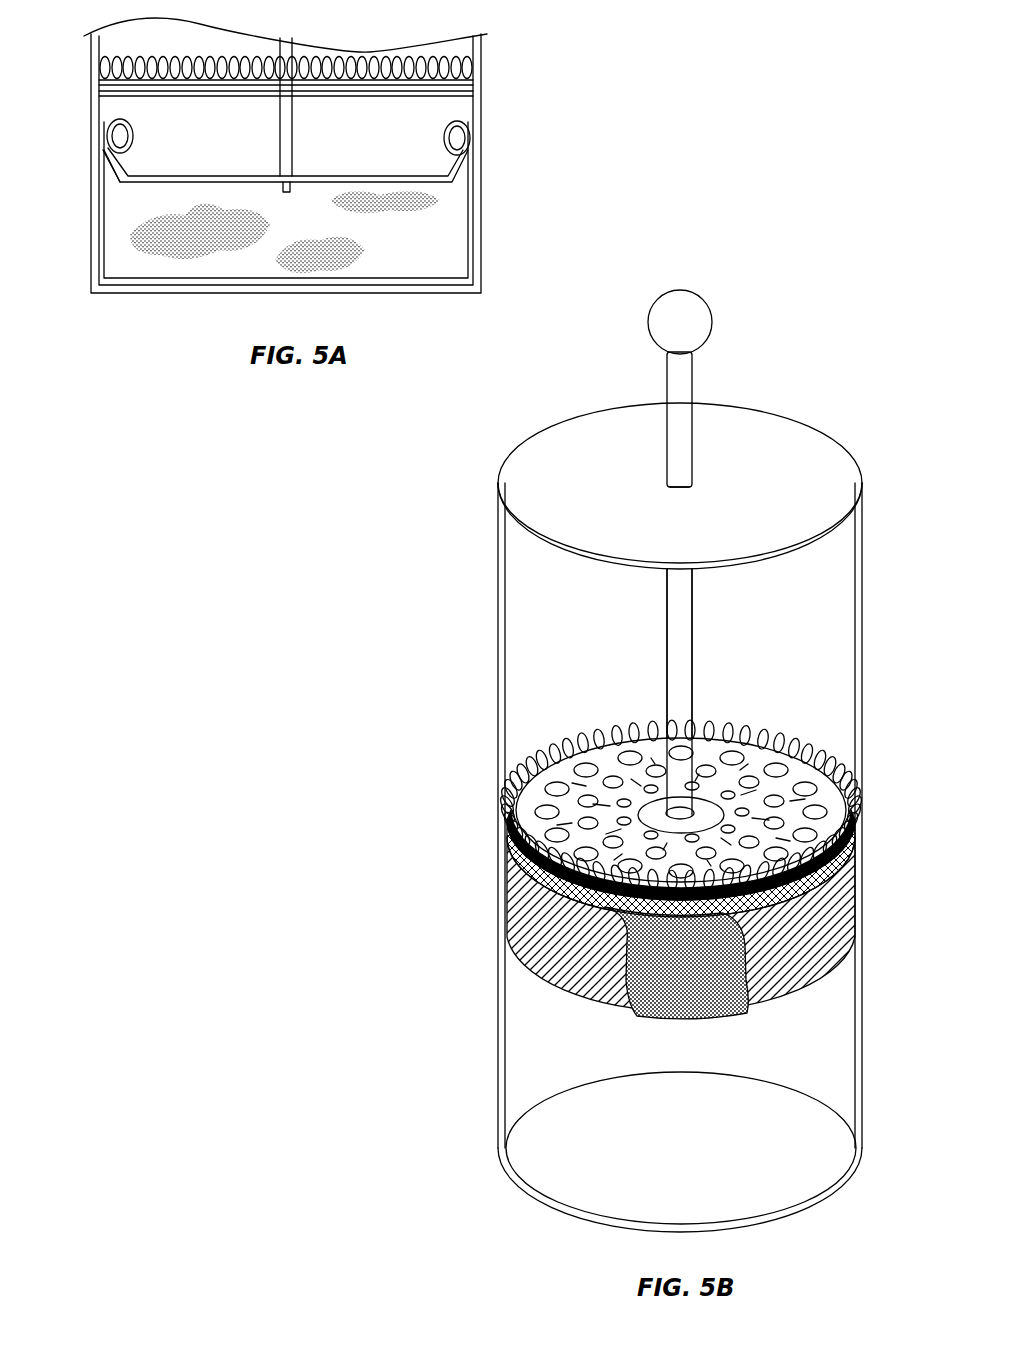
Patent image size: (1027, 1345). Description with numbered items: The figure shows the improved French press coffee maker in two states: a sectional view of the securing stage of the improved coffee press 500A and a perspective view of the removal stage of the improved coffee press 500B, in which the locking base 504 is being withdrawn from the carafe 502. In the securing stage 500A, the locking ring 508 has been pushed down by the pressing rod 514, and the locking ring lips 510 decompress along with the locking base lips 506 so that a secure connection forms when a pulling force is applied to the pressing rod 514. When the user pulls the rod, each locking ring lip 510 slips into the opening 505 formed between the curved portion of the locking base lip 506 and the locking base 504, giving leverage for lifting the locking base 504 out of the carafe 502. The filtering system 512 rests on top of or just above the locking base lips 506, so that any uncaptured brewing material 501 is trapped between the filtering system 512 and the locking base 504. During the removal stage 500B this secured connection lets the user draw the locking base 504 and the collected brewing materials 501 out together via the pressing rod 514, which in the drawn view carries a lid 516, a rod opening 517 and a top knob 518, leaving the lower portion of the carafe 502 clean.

In FIG. 5A, the securing stage of the improved coffee press 500A is at (172, 306).
In FIG. 5B, the removal stage of the improved coffee press 500B is at (435, 580).
In FIG. 5A, the brewing materials 501 is at (440, 198).
In FIG. 5B, the brewing materials 501 is at (700, 1012).
In FIG. 5A, the carafe 502 is at (424, 294).
In FIG. 5B, the carafe 502 is at (864, 552).
In FIG. 5A, the locking base 504 is at (384, 280).
In FIG. 5B, the locking base 504 is at (577, 1003).
In FIG. 5A, the opening 505 is at (120, 130).
In FIG. 5A, the locking base lip 506 is at (446, 128).
In FIG. 5A, the locking ring 508 is at (328, 176).
In FIG. 5B, the locking ring 508 is at (832, 745).
In FIG. 5A, the locking ring lip 510 is at (110, 186).
In FIG. 5A, the filtering system 512 is at (442, 48).
In FIG. 5B, the filtering system 512 is at (757, 727).
In FIG. 5B, the pressing rod 514 is at (693, 380).
In FIG. 5B, the lid 516 is at (780, 421).
In FIG. 5B, the rod opening in lid 517 is at (680, 490).
In FIG. 5B, the knob 518 is at (678, 290).